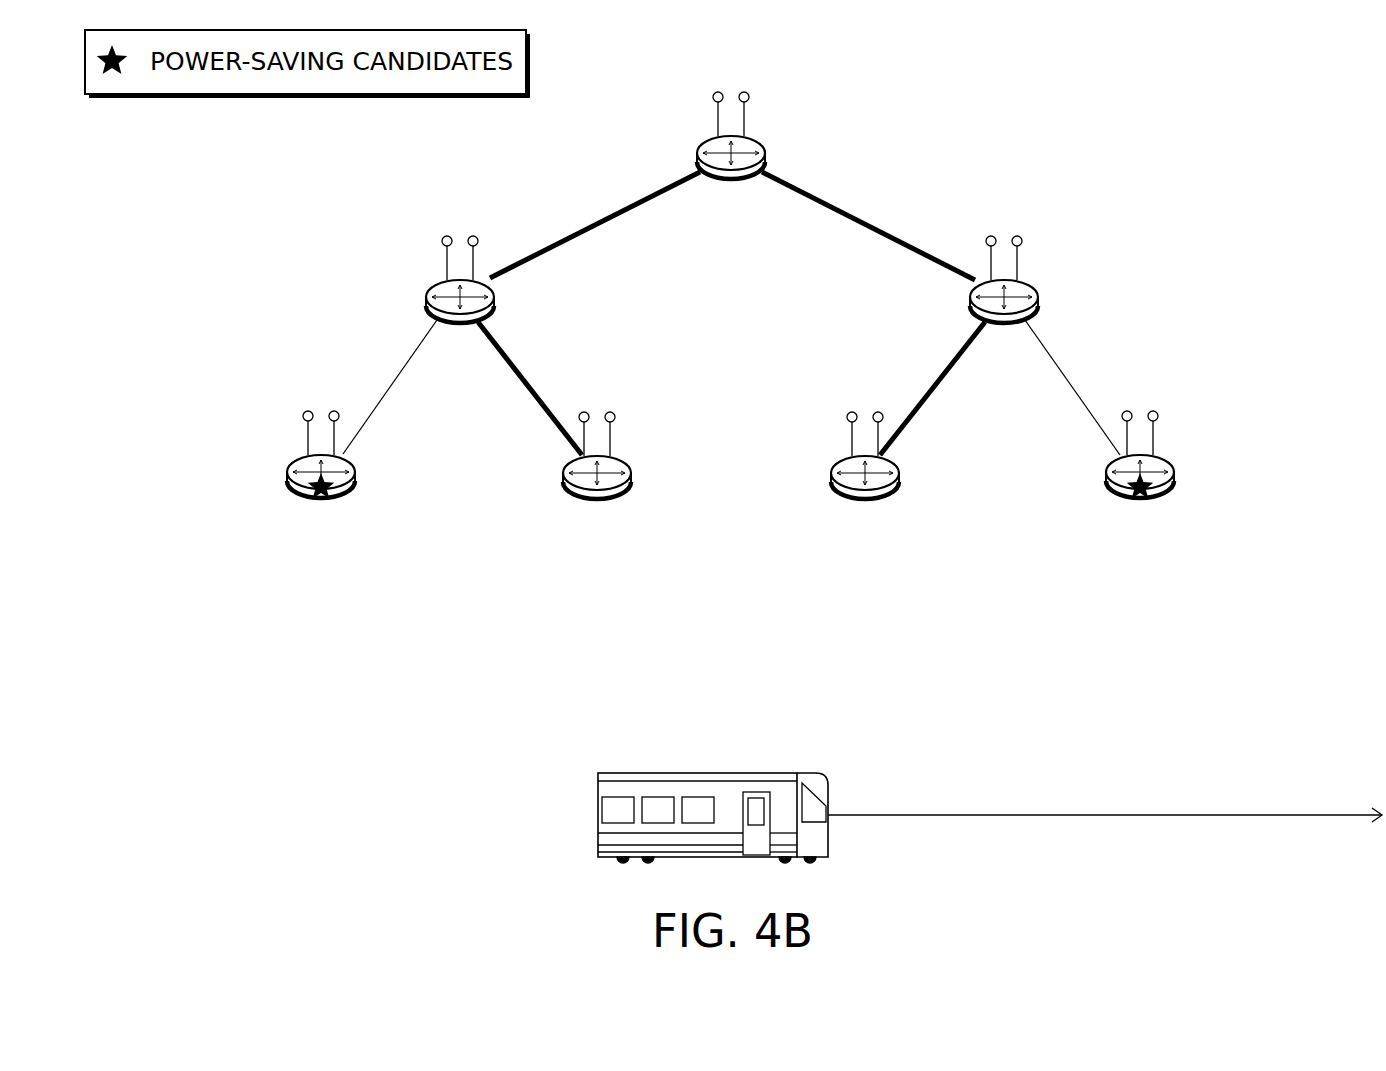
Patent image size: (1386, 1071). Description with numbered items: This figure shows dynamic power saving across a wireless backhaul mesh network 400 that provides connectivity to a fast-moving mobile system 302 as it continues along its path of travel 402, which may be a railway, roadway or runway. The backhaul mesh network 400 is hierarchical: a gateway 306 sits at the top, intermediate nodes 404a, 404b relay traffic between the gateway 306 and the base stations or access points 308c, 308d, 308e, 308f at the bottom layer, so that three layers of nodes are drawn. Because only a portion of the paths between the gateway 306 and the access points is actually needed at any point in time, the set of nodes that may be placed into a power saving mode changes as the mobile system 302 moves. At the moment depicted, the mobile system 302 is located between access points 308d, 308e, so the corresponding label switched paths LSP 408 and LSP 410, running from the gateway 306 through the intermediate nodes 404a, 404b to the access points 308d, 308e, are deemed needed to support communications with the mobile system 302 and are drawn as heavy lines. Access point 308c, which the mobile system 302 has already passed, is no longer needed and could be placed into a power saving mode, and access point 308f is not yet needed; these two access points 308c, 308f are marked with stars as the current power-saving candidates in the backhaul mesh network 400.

The backhaul mesh network 400 is at (1271, 96).
The gateway 306 is at (731, 157).
The intermediate node 404a is at (460, 302).
The intermediate node 404b is at (1004, 302).
The access point 308c is at (321, 476).
The access point 308d is at (597, 477).
The access point 308e is at (865, 477).
The access point 308f is at (1140, 476).
The LSP 408 is at (589, 305).
The LSP 410 is at (873, 305).
The mobile system 302 is at (723, 773).
The path of travel 402 is at (1105, 839).